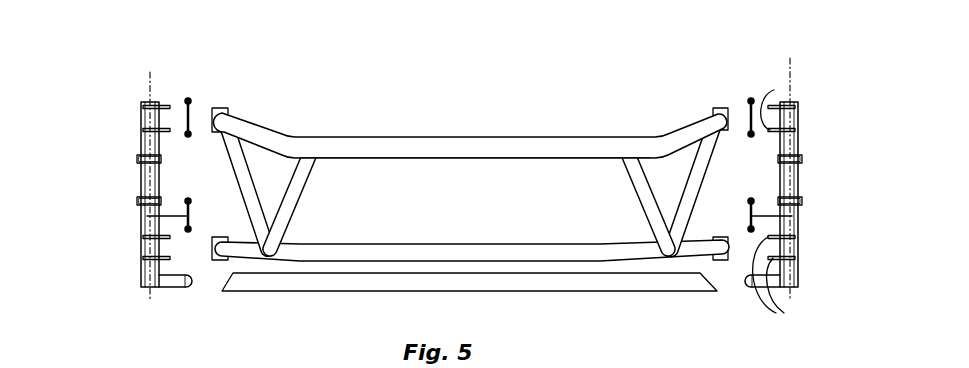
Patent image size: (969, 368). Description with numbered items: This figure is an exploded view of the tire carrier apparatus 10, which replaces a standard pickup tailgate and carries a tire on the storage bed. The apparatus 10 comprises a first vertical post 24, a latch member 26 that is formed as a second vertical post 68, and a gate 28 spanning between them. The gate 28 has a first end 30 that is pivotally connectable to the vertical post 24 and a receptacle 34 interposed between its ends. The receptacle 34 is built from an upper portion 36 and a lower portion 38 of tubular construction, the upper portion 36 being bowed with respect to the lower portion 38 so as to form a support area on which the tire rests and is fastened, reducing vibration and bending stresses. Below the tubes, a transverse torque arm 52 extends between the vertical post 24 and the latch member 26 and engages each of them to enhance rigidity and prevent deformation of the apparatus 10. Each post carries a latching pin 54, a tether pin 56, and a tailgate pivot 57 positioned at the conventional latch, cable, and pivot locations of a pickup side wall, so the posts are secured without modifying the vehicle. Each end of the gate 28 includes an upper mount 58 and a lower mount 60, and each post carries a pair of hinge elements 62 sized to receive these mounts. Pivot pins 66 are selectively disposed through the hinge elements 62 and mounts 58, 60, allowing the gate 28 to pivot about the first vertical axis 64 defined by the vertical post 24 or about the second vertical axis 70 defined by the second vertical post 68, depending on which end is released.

The apparatus 10 is at (575, 50).
The vertical post 24 is at (820, 158).
The latch member 26 is at (96, 162).
The gate 28 is at (362, 142).
The first end 30 is at (225, 138).
The receptacle 34 is at (660, 125).
The upper portion 36 is at (482, 153).
The lower portion 38 is at (472, 253).
The transverse torque arm 52 is at (624, 282).
The latching pin 54 is at (137, 159).
The tether pin 56 is at (137, 201).
The tailgate pivot 57 is at (160, 292).
The upper mount 58 is at (232, 116).
The lower mount 60 is at (222, 258).
The hinge element 62 is at (771, 91).
The first vertical axis 64 is at (792, 72).
The pivot pin 66 is at (191, 111).
The second vertical post 68 is at (150, 194).
The second vertical axis 70 is at (148, 72).